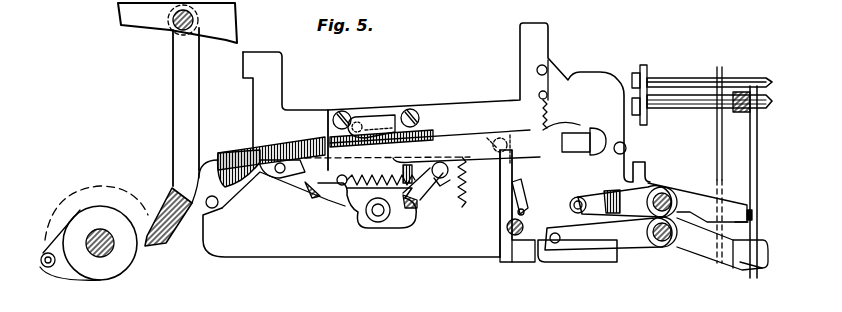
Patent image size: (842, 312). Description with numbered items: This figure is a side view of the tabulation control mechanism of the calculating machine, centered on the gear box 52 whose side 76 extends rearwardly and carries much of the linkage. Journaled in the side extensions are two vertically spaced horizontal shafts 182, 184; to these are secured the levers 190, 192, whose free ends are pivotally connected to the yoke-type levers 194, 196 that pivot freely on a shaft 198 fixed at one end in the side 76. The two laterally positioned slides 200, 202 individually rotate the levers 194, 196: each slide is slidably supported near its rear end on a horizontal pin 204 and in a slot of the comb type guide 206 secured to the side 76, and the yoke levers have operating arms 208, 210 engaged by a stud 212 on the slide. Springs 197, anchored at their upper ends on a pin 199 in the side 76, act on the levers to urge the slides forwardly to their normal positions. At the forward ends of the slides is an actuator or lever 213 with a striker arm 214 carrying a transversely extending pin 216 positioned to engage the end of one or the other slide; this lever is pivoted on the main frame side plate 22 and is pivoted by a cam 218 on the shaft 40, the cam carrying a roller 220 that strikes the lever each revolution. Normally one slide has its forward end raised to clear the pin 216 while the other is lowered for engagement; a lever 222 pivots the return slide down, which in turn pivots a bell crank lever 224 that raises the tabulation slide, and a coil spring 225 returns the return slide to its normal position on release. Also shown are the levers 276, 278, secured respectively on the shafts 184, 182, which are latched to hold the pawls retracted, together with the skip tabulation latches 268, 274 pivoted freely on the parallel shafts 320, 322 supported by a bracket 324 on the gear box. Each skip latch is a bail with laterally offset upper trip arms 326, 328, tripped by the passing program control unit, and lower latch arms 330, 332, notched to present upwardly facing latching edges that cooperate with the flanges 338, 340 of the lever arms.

The side plates 22 is at (228, 23).
The shaft 40 is at (105, 256).
The gear box 52 is at (356, 263).
The side 76 is at (292, 256).
The horizontal shaft 182 is at (653, 187).
The horizontal shaft 184 is at (662, 247).
The lever 190 is at (600, 210).
The lever 192 is at (627, 233).
The lever 194 is at (555, 207).
The lever 196 is at (558, 227).
The springs 197 is at (546, 97).
The shaft 198 is at (507, 237).
The pin 199 is at (550, 72).
The slide 200 is at (260, 174).
The slide 202 is at (283, 148).
The horizontal pin 204 is at (594, 130).
The comb type guide 206 is at (328, 170).
The operating arm 208 is at (505, 182).
The operating arm 210 is at (512, 205).
The stud 212 is at (487, 138).
The actuator or lever 213 is at (181, 153).
The striker arm 214 is at (150, 212).
The pin 216 is at (213, 208).
The cam 218 is at (128, 258).
The roller 220 is at (55, 266).
The lever 222 is at (378, 123).
The bell crank lever 224 is at (408, 221).
The coil spring 225 is at (503, 197).
The tabulation skip latch 268 is at (746, 78).
The tabulation skip latch 274 is at (712, 72).
The lever 276 is at (712, 256).
The lever 278 is at (708, 198).
The shaft 320 is at (757, 110).
The shaft 322 is at (765, 74).
The bracket 324 is at (640, 72).
The upper trip arm 326 is at (651, 60).
The upper trip arm 328 is at (663, 66).
The lower latch arm 330 is at (760, 170).
The lower latch arm 332 is at (716, 143).
The flange 338 is at (742, 272).
The flange 340 is at (743, 229).